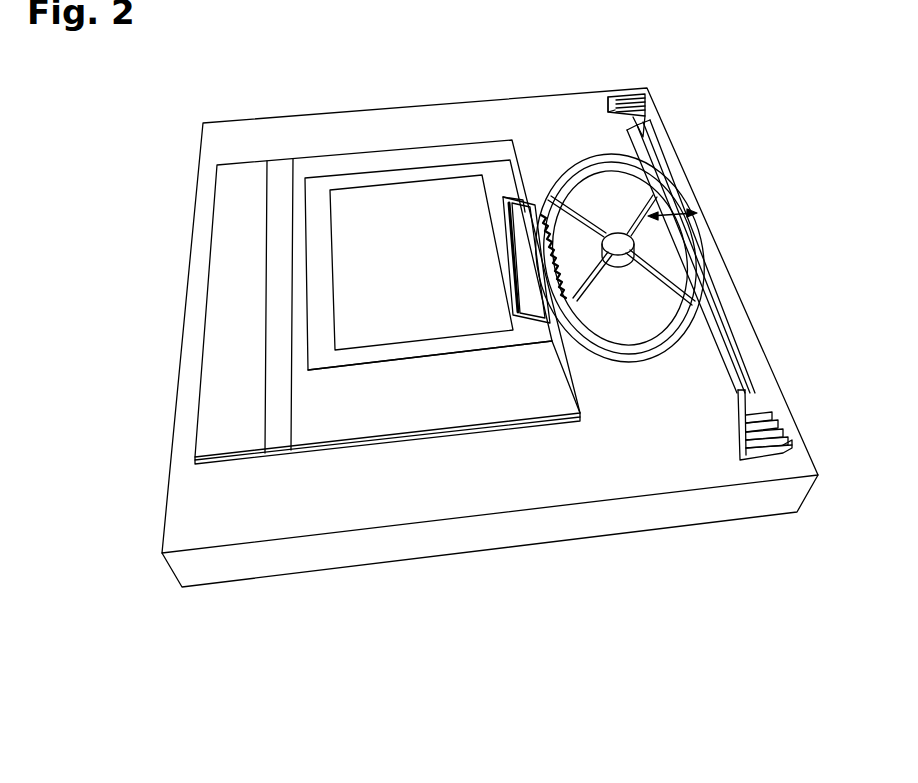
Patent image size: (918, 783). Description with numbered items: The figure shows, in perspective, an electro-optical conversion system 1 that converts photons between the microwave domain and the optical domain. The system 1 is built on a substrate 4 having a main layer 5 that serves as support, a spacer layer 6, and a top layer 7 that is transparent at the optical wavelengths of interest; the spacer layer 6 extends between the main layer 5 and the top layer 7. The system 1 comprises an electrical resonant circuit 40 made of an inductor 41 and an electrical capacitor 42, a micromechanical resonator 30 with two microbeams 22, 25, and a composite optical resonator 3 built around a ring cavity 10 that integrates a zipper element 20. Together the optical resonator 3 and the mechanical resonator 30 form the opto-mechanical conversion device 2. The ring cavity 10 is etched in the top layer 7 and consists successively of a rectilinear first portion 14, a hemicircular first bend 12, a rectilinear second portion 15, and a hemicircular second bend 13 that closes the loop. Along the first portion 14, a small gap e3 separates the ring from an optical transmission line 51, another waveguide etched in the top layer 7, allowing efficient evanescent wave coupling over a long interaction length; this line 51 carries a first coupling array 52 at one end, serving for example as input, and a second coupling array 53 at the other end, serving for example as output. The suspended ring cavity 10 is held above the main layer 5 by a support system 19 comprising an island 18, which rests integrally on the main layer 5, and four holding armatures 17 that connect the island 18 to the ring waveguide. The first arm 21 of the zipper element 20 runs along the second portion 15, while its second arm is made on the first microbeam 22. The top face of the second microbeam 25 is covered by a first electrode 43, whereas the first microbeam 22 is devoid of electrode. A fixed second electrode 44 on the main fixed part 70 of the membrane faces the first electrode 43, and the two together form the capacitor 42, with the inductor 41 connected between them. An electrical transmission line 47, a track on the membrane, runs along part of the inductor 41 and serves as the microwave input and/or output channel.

The electro-optical conversion system 1 is at (507, 590).
The opto-mechanical conversion device 2 is at (657, 658).
The composite optical resonator 3 is at (603, 622).
The substrate 4 is at (112, 415).
The main layer 5 is at (207, 518).
The spacer layer 6 is at (193, 458).
The top layer 7 is at (183, 460).
The ring cavity 10 is at (658, 372).
The first bend 12 is at (583, 157).
The second bend 13 is at (673, 345).
The first portion 14 is at (672, 233).
The second portion 15 is at (560, 205).
The holding armatures 17 is at (627, 220).
The island 18 is at (683, 272).
The support system 19 is at (805, 262).
The zipper element 20 is at (577, 582).
The first arm 21 is at (636, 328).
The first microbeam 22 is at (583, 302).
The second microbeam 25 is at (535, 270).
The micromechanical resonator 30 is at (540, 340).
The electrical resonant circuit 40 is at (420, 372).
The inductor 41 is at (383, 178).
The electrical capacitor 42 is at (410, 205).
The first electrode 43 is at (512, 228).
The second electrode 44 is at (503, 246).
The electrical transmission line 47 is at (278, 218).
The optical transmission line 51 is at (697, 255).
The first coupling array 52 is at (645, 103).
The second coupling array 53 is at (750, 405).
The main fixed part 70 is at (414, 333).
The gap e3 is at (676, 214).